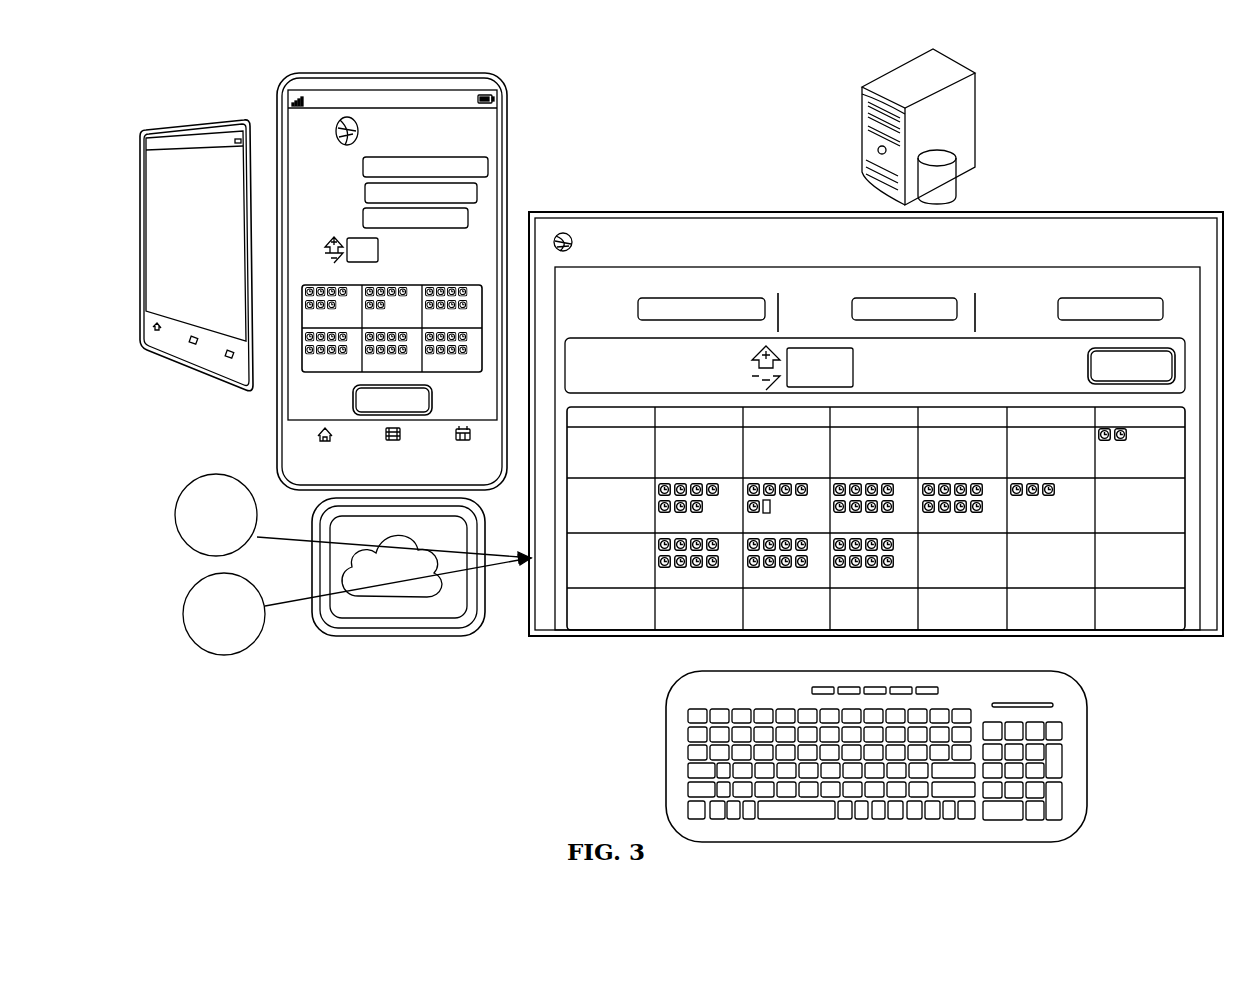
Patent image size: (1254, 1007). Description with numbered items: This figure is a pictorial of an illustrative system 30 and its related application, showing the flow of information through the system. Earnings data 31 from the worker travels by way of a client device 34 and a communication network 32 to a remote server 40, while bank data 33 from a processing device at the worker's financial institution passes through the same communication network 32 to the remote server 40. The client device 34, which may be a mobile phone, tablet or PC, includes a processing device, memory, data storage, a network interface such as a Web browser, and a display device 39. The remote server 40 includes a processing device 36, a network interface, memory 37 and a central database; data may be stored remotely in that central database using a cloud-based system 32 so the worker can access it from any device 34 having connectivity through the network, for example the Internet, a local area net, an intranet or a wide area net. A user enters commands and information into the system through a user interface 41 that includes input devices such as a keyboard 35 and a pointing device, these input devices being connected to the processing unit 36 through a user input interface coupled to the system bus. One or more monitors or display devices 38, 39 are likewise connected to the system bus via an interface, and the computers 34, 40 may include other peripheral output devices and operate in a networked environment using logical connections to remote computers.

The system 30 is at (1152, 78).
The earnings data 31 is at (197, 473).
The communication network 32 is at (393, 638).
The bank data 33 is at (220, 657).
The client device 34 is at (172, 124).
The keyboard 35 is at (666, 760).
The processing device 36 is at (975, 112).
The memory 37 is at (958, 183).
The display device 38 is at (575, 212).
The display device 39 is at (470, 157).
The remote server 40 is at (1032, 202).
The user interface 41 is at (1087, 678).